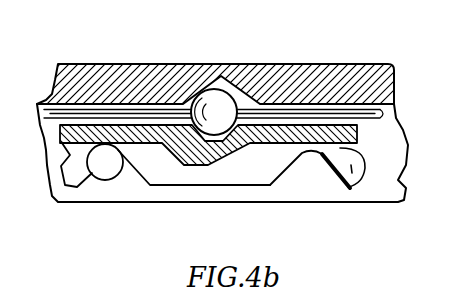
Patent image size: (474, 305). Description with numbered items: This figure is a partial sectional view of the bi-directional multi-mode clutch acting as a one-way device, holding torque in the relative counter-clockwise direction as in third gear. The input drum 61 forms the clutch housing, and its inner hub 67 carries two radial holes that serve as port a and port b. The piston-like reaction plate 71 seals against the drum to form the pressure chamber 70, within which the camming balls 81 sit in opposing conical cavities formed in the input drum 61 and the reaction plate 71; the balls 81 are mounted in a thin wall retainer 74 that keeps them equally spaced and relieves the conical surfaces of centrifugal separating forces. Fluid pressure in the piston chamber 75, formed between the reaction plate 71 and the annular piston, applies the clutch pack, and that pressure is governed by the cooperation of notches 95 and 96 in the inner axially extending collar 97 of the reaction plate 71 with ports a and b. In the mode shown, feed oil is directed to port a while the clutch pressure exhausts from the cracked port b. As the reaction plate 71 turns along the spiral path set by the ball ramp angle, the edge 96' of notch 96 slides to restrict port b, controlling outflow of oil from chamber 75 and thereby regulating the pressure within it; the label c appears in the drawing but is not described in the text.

The input drum 61 is at (130, 82).
The inner hub 67 is at (394, 150).
The pressure chamber 70 is at (266, 106).
The piston-like reaction plate 71 is at (300, 128).
The thin wall retainer 74 is at (341, 117).
The camming balls 81 is at (200, 97).
The piston chamber 75 is at (233, 231).
The notch 95 is at (108, 165).
The port a is at (107, 163).
The inner axially extending collar 97 is at (167, 170).
The notch 96 is at (300, 209).
The edge of notch 96' is at (351, 208).
The port b is at (344, 163).
The point c is at (469, 231).